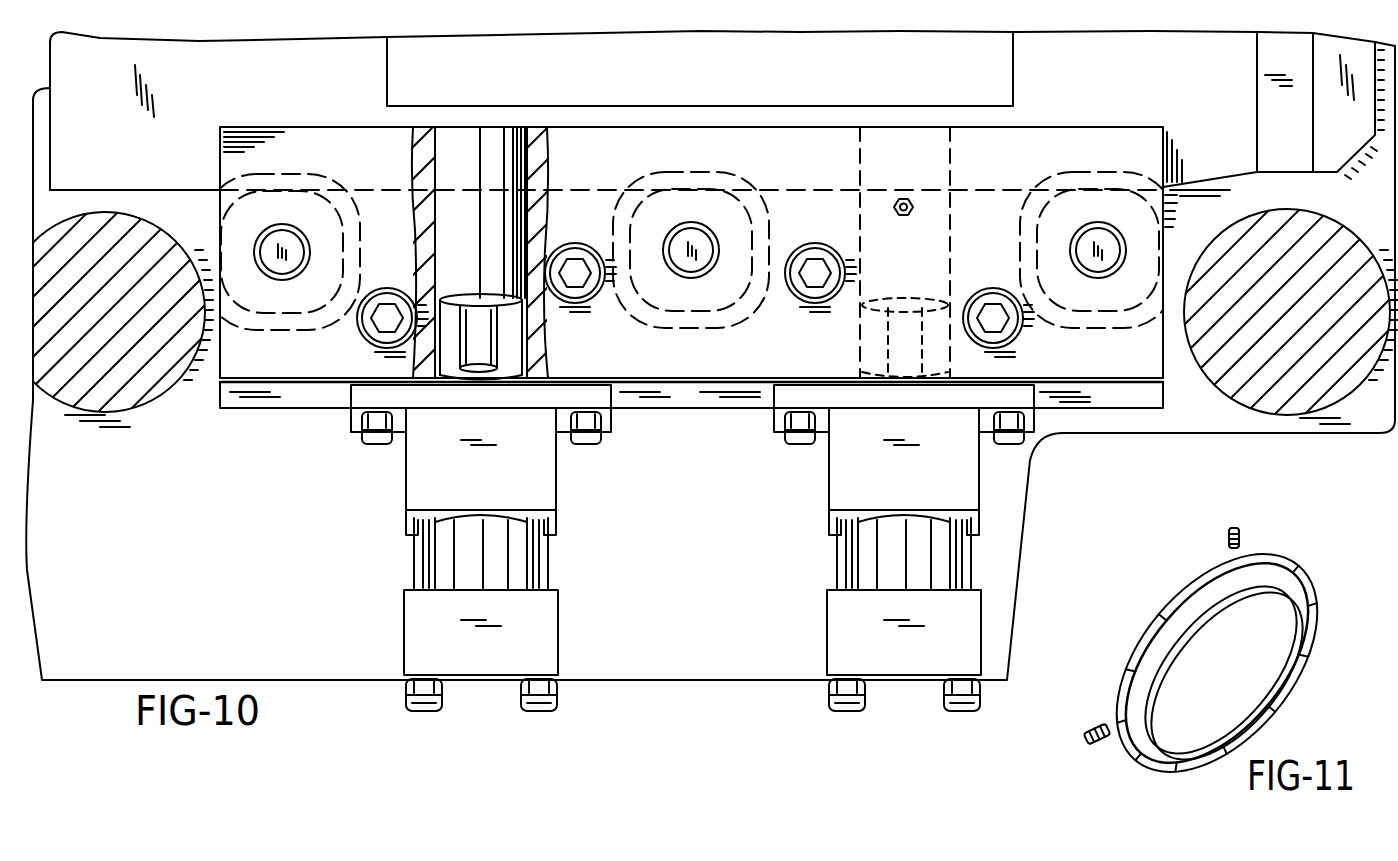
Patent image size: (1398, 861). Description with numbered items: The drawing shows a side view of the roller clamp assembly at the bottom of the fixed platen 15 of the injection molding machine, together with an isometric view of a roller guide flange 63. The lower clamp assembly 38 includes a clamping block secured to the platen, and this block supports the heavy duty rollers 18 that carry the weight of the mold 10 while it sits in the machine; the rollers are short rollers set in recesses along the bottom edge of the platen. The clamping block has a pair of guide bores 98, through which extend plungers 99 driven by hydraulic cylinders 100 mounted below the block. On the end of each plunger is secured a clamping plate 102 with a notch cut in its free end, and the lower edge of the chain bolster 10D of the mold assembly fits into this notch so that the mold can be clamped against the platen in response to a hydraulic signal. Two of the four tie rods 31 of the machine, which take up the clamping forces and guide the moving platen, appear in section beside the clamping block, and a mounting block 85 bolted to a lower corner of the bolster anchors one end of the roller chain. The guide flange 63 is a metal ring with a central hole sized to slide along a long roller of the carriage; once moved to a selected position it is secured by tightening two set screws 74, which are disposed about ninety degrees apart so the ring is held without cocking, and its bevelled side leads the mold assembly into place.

In FIG. 10, the mold 10 is at (606, 100).
In FIG. 10, the chain bolster 10D is at (326, 102).
In FIG. 10, the fixed platen 15 is at (290, 584).
In FIG. 10, the rollers 18 is at (333, 200).
In FIG. 10, the tie rods 31 is at (133, 395).
In FIG. 10, the lower clamp assembly 38 is at (716, 399).
In FIG. 11, the guide flange 63 is at (1165, 610).
In FIG. 11, the set screws 74 is at (1228, 538).
In FIG. 10, the mounting block 85 is at (1265, 92).
In FIG. 10, the guide bores 98 is at (520, 345).
In FIG. 10, the plunger 99 is at (470, 315).
In FIG. 10, the hydraulic cylinders 100 is at (512, 567).
In FIG. 10, the clamping plate 102 is at (487, 138).